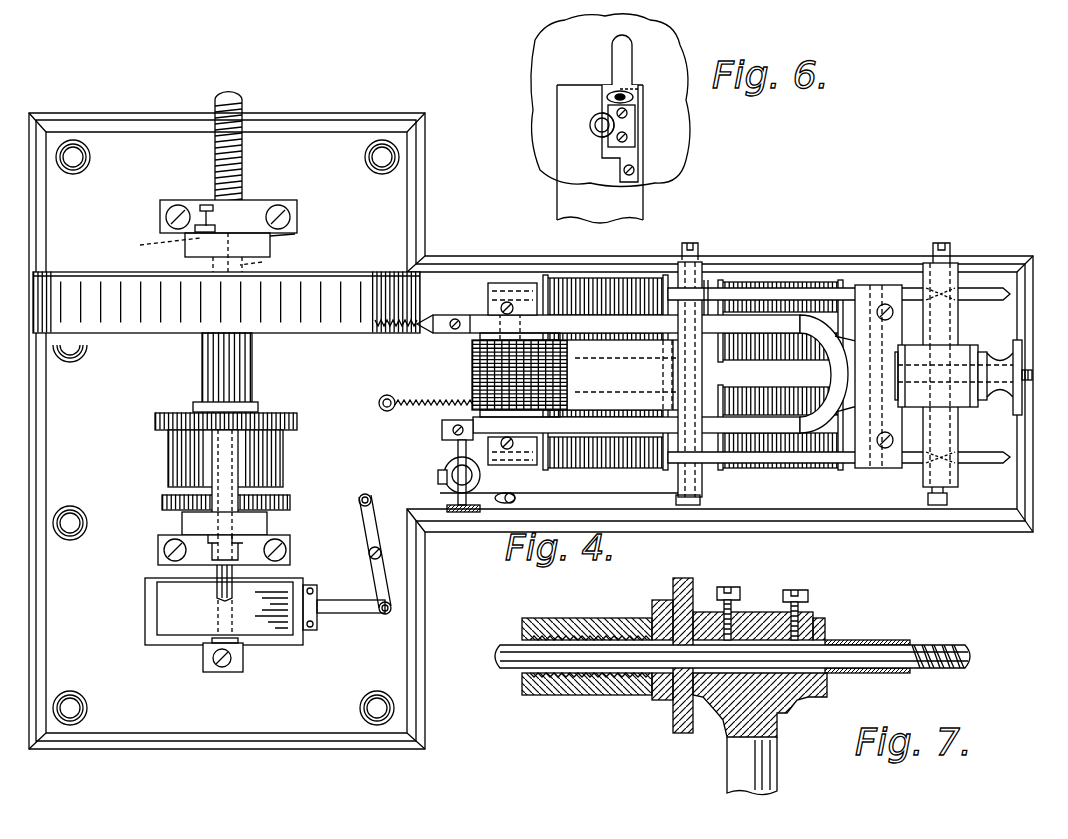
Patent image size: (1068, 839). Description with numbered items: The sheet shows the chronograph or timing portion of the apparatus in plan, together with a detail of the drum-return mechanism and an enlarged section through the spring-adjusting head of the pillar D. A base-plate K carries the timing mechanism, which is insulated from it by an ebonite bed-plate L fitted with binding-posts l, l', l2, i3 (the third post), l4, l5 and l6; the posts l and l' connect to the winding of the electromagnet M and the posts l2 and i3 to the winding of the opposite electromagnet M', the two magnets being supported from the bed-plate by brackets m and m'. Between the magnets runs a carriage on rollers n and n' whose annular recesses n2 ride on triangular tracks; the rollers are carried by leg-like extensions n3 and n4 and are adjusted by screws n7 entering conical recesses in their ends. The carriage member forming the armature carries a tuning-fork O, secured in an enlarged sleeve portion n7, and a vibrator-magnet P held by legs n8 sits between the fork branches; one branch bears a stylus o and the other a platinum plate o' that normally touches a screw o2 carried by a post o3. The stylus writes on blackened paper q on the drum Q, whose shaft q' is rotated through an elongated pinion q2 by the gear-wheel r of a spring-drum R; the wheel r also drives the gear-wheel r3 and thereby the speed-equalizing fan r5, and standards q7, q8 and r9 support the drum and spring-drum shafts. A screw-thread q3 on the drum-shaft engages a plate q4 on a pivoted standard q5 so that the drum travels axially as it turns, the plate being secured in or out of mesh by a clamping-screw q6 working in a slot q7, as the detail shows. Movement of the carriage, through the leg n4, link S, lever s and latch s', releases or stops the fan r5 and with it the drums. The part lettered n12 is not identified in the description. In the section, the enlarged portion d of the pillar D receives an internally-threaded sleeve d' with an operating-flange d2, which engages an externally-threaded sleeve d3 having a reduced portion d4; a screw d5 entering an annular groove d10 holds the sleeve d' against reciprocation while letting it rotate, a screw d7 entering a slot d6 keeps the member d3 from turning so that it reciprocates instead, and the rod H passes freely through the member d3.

In FIG. 4, the base-plate K is at (965, 535).
In FIG. 4, the binding-post l is at (529, 522).
In FIG. 4, the binding-post l' is at (364, 708).
In FIG. 4, the binding-post l2 is at (82, 157).
In FIG. 4, the binding-post i3 is at (385, 175).
In FIG. 4, the binding-post l4 is at (95, 350).
In FIG. 4, the binding-post l5 is at (387, 395).
In FIG. 4, the binding-post l6 is at (70, 539).
In FIG. 4, the strip of blackened paper q is at (226, 302).
In FIG. 4, the drum-shaft q' is at (219, 361).
In FIG. 4, the elongated pinion q2 is at (253, 368).
In FIG. 4, the screw-thread q3 is at (243, 180).
In FIG. 4, the engaging member or plate q4 is at (157, 242).
In FIG. 6, the engaging member or plate q4 is at (636, 130).
In FIG. 4, the pivoted standard q5 is at (200, 232).
In FIG. 6, the pivoted standard q5 is at (633, 86).
In FIG. 4, the clamping-screw q6 is at (205, 205).
In FIG. 6, the clamping-screw q6 is at (608, 94).
In FIG. 4, the standard q7 is at (295, 235).
In FIG. 6, the standard q7 is at (600, 98).
In FIG. 4, the standard q8 is at (182, 525).
In FIG. 4, the drum Q is at (251, 236).
In FIG. 6, the drum Q is at (600, 127).
In FIG. 4, the gear-wheel r is at (297, 415).
In FIG. 4, the gear-wheel r3 is at (291, 500).
In FIG. 4, the speed equalizing and retarding fan or paddle r5 is at (231, 625).
In FIG. 4, the standard r9 is at (259, 407).
In FIG. 4, the spring-drum R is at (240, 458).
In FIG. 4, the lever s is at (363, 554).
In FIG. 4, the latch s' is at (351, 621).
In FIG. 4, the vibrator-magnet P is at (470, 380).
In FIG. 4, the stylus o is at (608, 311).
In FIG. 4, the platinum plate o' is at (434, 441).
In FIG. 4, the screw o2 is at (458, 470).
In FIG. 4, the post o3 is at (438, 476).
In FIG. 4, the legs n8 is at (508, 300).
In FIG. 4, the bracket m is at (494, 297).
In FIG. 4, the bracket m' is at (878, 376).
In FIG. 4, the electromagnet M is at (605, 349).
In FIG. 4, the electromagnet M' is at (780, 349).
In FIG. 4, the roller n is at (940, 374).
In FIG. 4, the roller n' is at (753, 257).
In FIG. 4, the annular recess n2 is at (712, 290).
In FIG. 4, the leg-like extension n3 is at (692, 262).
In FIG. 4, the leg-like extension n4 is at (985, 300).
In FIG. 4, the screw n7 is at (702, 500).
In FIG. 4, the block n12 is at (633, 375).
In FIG. 4, the link S is at (573, 489).
In FIG. 4, the ebonite bed-plate L is at (875, 491).
In FIG. 4, the tuning-fork O is at (685, 374).
In FIG. 7, the rod H is at (498, 658).
In FIG. 7, the enlarged portion d is at (760, 661).
In FIG. 7, the internally-threaded sleeve d' is at (587, 674).
In FIG. 7, the operating-flange d2 is at (690, 574).
In FIG. 7, the externally-threaded sleeve d3 is at (665, 700).
In FIG. 7, the reduced portion d4 is at (897, 674).
In FIG. 7, the screw d5 is at (733, 587).
In FIG. 7, the slot d6 is at (855, 637).
In FIG. 7, the screw d7 is at (808, 588).
In FIG. 7, the annular groove d10 is at (718, 710).
In FIG. 7, the pillar D is at (778, 768).